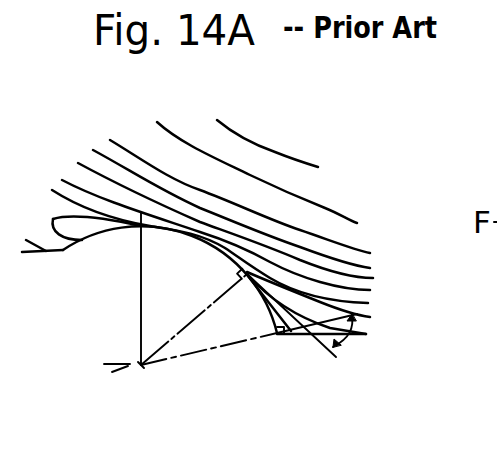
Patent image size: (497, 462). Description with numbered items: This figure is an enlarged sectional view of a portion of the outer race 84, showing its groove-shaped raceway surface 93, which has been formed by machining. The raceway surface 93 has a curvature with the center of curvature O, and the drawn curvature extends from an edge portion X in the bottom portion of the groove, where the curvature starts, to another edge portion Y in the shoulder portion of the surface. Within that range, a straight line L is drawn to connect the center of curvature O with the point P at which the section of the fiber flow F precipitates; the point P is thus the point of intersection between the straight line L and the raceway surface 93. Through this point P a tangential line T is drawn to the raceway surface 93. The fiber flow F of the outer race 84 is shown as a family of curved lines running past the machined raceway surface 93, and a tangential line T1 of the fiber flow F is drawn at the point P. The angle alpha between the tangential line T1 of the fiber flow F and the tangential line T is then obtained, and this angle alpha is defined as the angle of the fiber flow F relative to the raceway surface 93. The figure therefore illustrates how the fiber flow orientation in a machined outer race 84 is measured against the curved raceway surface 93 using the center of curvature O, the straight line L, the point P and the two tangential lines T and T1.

The outer race 84 is at (270, 176).
The raceway surface 93 is at (197, 234).
The fiber flow F is at (343, 284).
The edge portion X is at (133, 289).
The point P is at (245, 273).
The straight line L is at (168, 343).
The center of curvature O is at (128, 382).
The edge portion Y is at (320, 347).
The tangential line of the fiber flow T1 is at (342, 304).
The tangential line T is at (312, 340).
The angle alpha is at (345, 342).